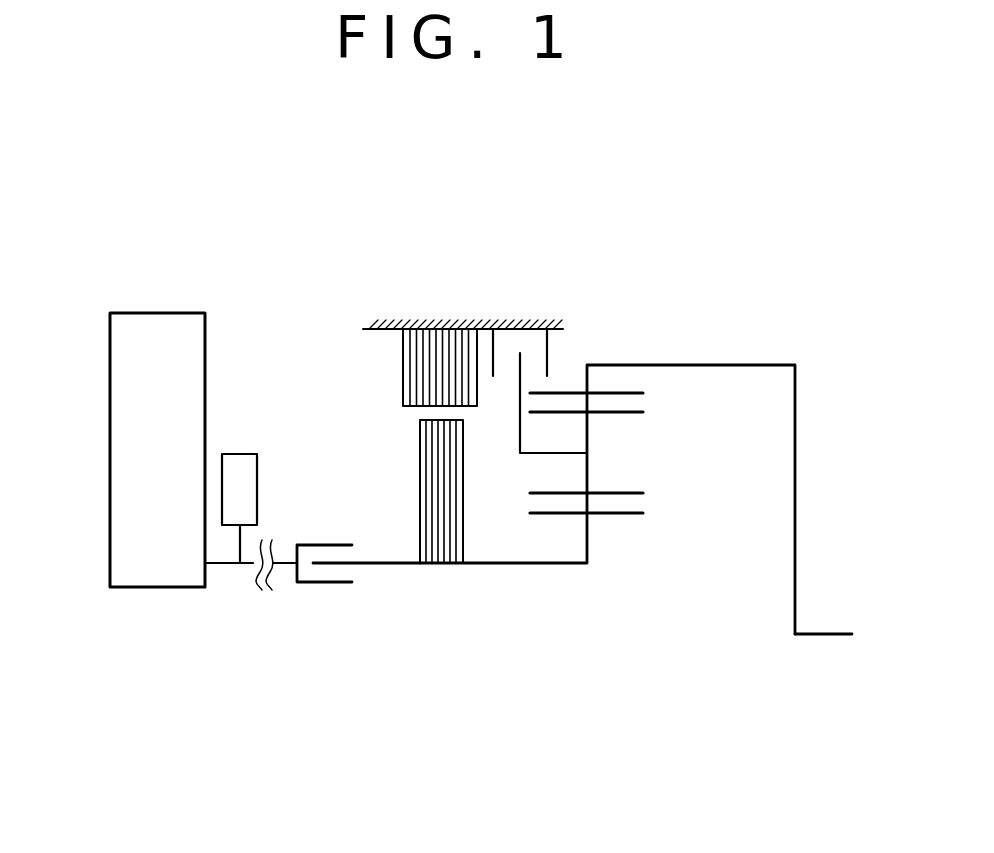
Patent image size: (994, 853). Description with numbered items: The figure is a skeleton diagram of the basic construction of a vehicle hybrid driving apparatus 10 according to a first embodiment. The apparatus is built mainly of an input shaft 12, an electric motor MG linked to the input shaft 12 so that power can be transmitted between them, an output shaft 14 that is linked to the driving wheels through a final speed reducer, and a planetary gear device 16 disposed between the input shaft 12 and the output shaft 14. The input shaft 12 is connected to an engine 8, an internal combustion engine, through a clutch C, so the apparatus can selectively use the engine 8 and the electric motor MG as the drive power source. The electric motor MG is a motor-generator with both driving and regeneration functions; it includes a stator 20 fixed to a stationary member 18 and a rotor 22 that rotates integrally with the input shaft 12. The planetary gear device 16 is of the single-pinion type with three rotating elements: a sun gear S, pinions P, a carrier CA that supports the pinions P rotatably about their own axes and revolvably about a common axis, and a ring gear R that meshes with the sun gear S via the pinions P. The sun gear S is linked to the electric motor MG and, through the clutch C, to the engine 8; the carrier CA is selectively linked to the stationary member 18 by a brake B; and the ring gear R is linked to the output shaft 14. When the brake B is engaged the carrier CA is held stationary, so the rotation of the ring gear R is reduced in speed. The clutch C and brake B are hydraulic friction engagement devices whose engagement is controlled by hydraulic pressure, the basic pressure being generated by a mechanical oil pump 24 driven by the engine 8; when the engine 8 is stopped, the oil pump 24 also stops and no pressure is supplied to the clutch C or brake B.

The engine 8 is at (146, 329).
The vehicle hybrid driving apparatus 10 is at (764, 299).
The input shaft 12 is at (483, 565).
The output shaft 14 is at (825, 636).
The planetary gear device 16 is at (697, 477).
The stationary member 18 is at (477, 327).
The stator 20 is at (443, 365).
The rotor 22 is at (438, 497).
The mechanical oil pump 24 is at (236, 467).
The electric motor MG is at (396, 439).
The clutch C is at (358, 579).
The brake B is at (530, 352).
The carrier CA is at (537, 454).
The ring gear R is at (620, 393).
The pinions P is at (608, 492).
The sun gear S is at (620, 515).